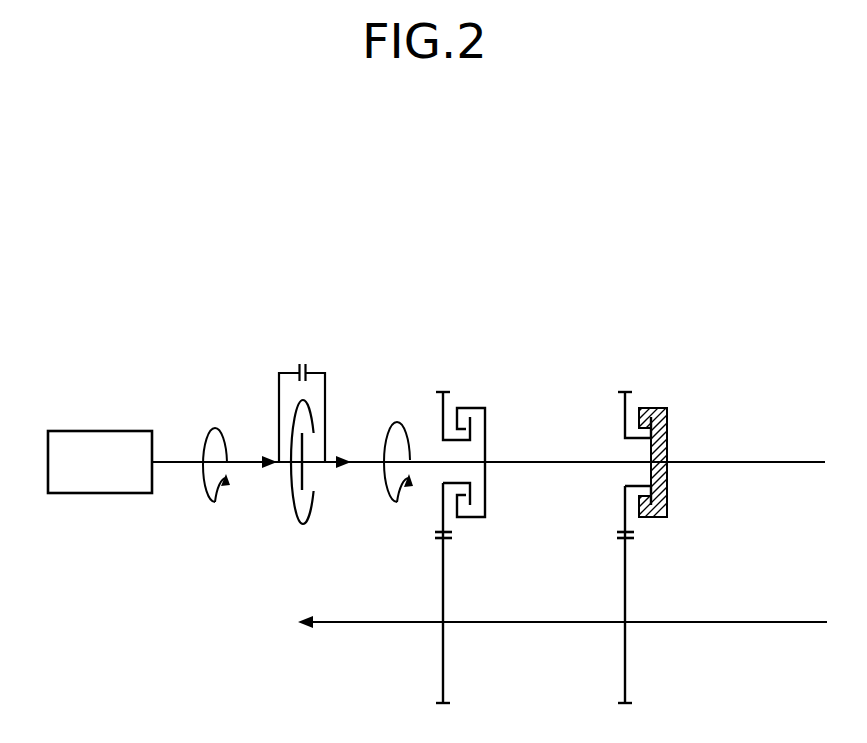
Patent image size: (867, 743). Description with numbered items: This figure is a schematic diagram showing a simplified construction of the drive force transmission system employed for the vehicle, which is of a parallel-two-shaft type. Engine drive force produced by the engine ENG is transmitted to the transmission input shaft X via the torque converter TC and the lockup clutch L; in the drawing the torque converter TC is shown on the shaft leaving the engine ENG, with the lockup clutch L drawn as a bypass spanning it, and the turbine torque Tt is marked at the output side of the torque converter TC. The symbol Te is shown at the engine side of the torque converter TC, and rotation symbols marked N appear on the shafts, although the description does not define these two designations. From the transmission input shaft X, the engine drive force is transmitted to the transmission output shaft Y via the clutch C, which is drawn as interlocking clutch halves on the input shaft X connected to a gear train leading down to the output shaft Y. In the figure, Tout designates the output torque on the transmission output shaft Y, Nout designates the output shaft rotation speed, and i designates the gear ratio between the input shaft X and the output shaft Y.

The engine ENG is at (100, 462).
The torque converter TC is at (296, 513).
The lockup clutch L is at (315, 372).
The rotational speed N is at (308, 447).
The engine torque Te is at (259, 447).
The turbine torque Tt is at (341, 447).
The transmission input shaft X is at (423, 461).
The clutch C is at (476, 408).
The gear ratio i is at (534, 593).
The output shaft rotation speed Nout is at (397, 542).
The transmission output shaft Y is at (370, 625).
The output torque Tout is at (329, 596).